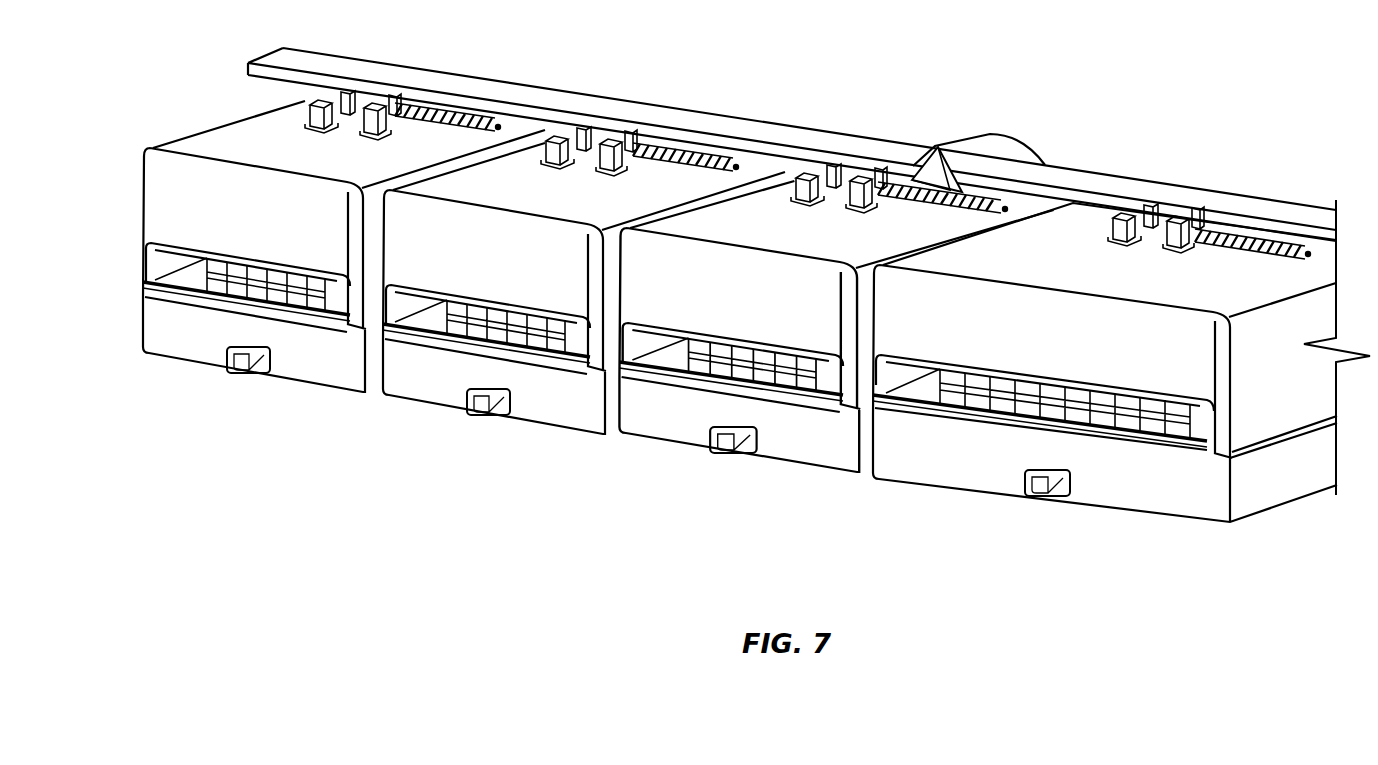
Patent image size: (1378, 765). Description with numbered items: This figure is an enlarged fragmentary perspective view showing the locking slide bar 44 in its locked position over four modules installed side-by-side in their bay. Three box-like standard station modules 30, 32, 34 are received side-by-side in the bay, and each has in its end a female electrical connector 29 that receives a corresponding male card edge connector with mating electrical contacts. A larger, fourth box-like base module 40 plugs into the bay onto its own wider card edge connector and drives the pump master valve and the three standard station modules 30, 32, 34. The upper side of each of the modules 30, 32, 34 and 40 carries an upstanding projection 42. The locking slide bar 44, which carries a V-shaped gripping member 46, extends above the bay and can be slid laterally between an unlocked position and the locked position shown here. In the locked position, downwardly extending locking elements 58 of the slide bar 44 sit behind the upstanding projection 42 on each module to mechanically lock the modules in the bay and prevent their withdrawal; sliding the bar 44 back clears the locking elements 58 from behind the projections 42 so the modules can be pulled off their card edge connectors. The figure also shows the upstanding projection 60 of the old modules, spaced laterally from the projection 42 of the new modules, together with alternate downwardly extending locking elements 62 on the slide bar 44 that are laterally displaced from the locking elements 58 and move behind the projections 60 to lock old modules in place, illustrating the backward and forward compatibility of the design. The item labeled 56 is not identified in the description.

The female electrical connector 29 is at (233, 298).
The standard station module 30 is at (783, 237).
The standard station module 32 is at (558, 200).
The standard station module 34 is at (314, 160).
The base module 40 is at (1032, 277).
The upstanding projection 42 is at (330, 112).
The locking slide bar 44 is at (1085, 190).
The V-shaped gripping member 46 is at (993, 152).
The wedge key 56 is at (940, 150).
The locking element 58 is at (350, 102).
The upstanding projection 60 is at (377, 137).
The alternate locking element 62 is at (400, 112).